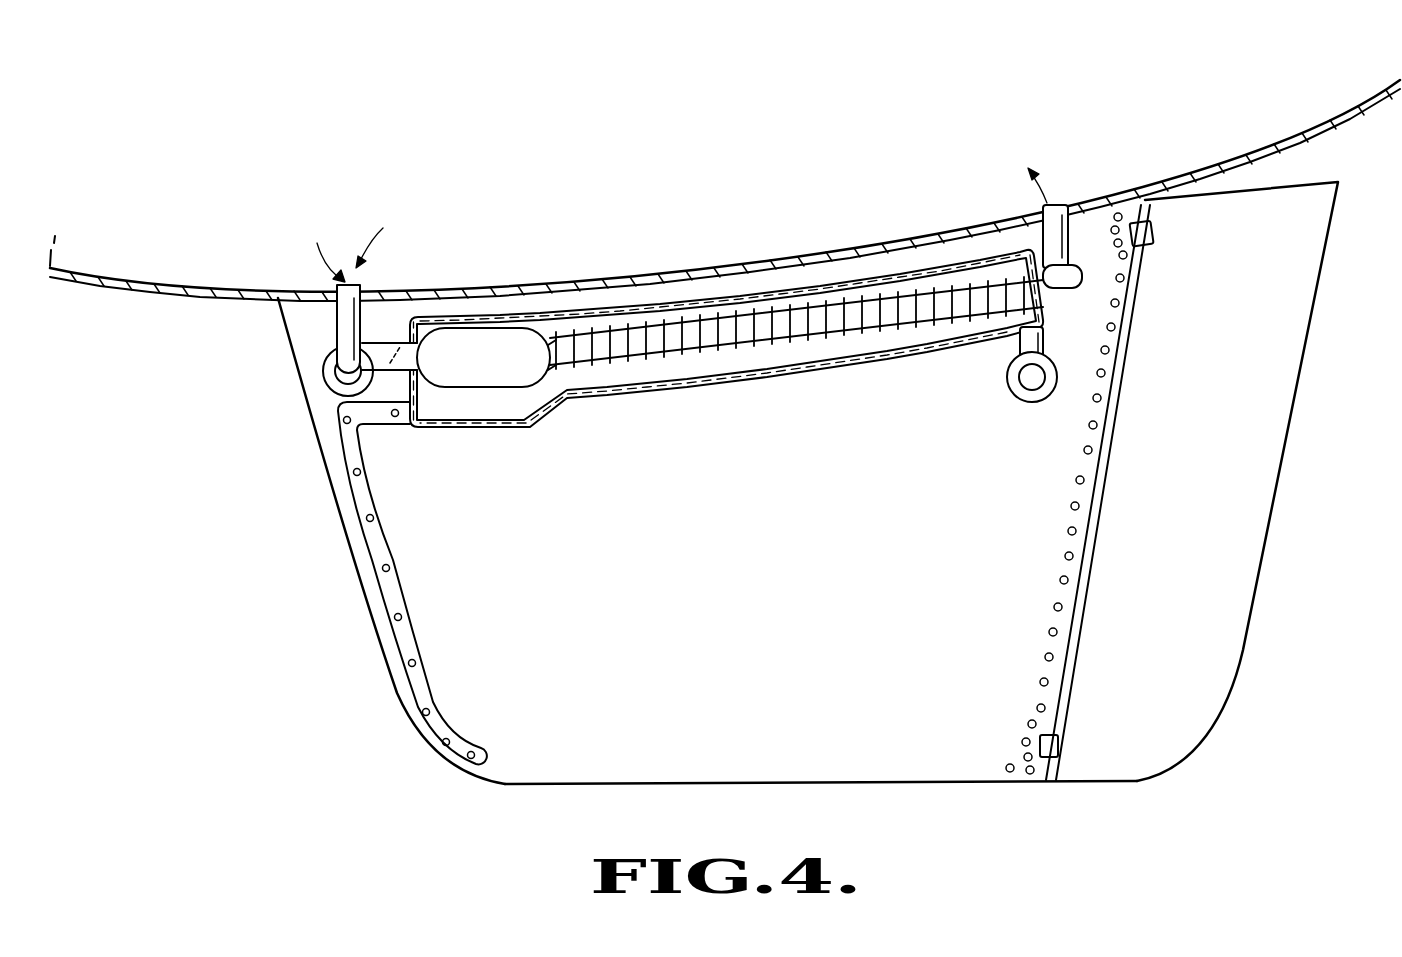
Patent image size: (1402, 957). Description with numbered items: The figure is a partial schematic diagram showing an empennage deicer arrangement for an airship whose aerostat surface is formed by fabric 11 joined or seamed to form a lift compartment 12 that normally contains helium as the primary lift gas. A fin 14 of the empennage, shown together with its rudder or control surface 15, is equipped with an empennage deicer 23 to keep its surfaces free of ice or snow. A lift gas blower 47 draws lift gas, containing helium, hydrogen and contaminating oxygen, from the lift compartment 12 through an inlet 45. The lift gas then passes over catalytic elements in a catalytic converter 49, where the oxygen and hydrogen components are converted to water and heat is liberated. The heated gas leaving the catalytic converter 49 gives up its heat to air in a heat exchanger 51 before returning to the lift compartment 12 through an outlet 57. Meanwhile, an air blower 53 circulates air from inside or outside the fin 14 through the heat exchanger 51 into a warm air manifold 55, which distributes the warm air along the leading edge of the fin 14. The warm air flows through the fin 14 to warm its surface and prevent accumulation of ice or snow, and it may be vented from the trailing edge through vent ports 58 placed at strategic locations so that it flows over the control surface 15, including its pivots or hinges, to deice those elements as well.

The fabric 11 is at (188, 300).
The lift compartment 12 is at (744, 160).
The fin 14 is at (515, 785).
The rudder 15 is at (1243, 645).
The empennage deicer 23 is at (575, 314).
The inlet 45 is at (362, 280).
The lift gas blower 47 is at (322, 385).
The catalytic converter 49 is at (510, 380).
The heat exchanger 51 is at (715, 350).
The air blower 53 is at (1023, 400).
The warm air manifold 55 is at (388, 597).
The outlet 57 is at (1067, 207).
The vent ports 58 is at (1010, 770).